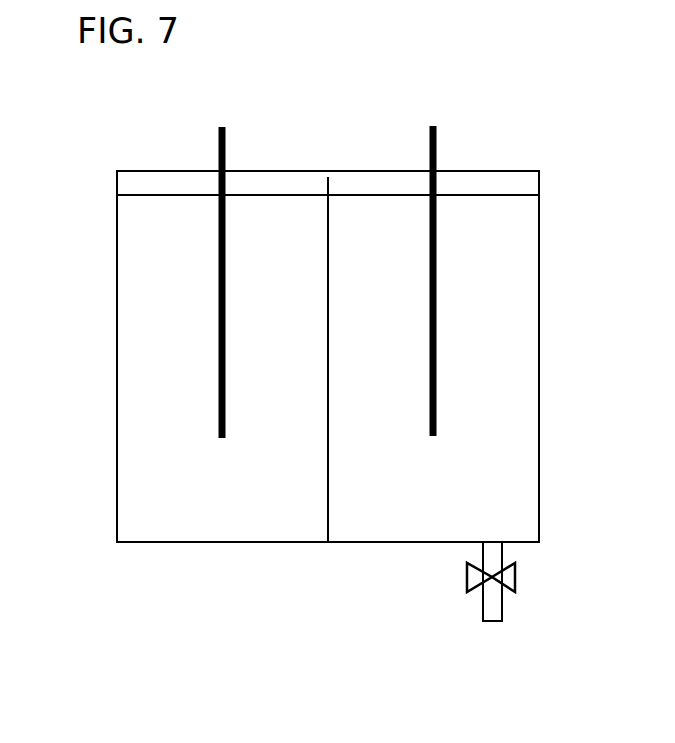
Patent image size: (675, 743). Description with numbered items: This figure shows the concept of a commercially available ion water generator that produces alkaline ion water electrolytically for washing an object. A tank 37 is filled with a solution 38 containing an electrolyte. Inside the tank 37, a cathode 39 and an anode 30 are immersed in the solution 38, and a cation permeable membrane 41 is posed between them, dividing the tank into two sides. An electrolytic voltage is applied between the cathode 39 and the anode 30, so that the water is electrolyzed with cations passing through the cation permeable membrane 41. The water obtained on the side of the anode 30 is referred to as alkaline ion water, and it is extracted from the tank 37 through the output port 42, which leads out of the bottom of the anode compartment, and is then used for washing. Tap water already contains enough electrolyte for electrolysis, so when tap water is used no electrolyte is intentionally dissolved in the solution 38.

The anode 30 is at (437, 152).
The tank 37 is at (536, 407).
The solution 38 is at (152, 346).
The cathode 39 is at (218, 150).
The cation permeable membrane 41 is at (328, 509).
The output port 42 is at (482, 613).